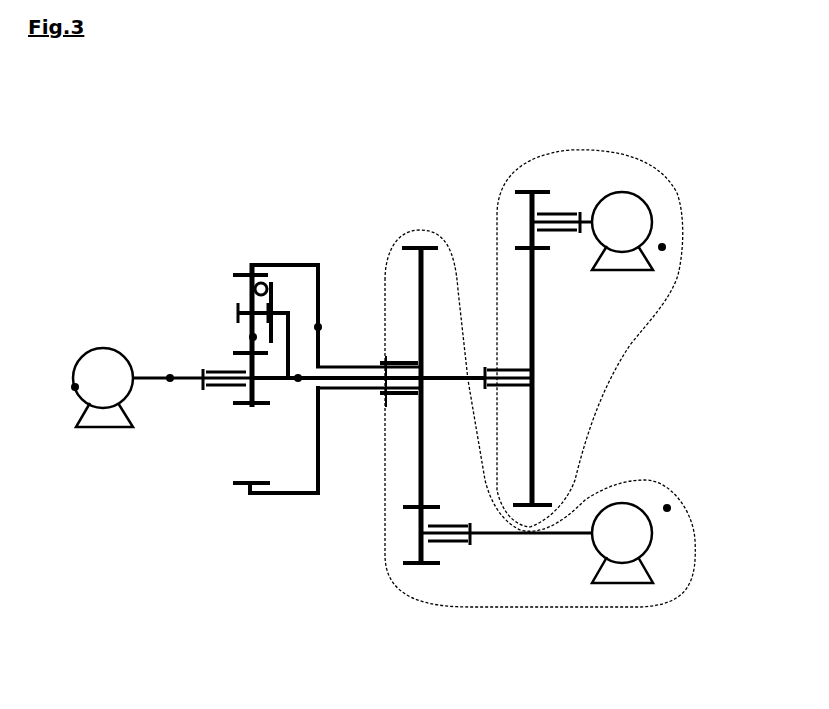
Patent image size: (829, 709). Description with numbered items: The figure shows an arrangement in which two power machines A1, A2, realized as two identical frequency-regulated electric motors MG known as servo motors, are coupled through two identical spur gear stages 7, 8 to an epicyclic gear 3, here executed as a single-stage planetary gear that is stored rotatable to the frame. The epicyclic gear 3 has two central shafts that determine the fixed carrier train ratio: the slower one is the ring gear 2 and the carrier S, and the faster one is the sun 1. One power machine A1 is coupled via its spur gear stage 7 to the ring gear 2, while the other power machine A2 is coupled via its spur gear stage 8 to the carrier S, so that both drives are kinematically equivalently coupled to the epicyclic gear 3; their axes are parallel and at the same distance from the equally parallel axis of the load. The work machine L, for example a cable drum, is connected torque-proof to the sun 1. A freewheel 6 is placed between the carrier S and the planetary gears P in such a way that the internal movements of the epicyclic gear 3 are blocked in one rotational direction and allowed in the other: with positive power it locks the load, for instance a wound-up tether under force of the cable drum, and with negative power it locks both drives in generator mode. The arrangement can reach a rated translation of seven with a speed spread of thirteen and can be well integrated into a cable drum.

The sun 1 is at (170, 378).
The ring gear 2 is at (318, 327).
The epicyclic gear 3 is at (319, 399).
The freewheel 6 is at (540, 462).
The spur gear stage 7 is at (593, 301).
The spur gear stage 8 is at (267, 290).
The planetary gears P is at (253, 337).
The carrier shaft S is at (298, 380).
The work machine L is at (75, 387).
The power machine A1 is at (662, 247).
The power machine A2 is at (667, 508).